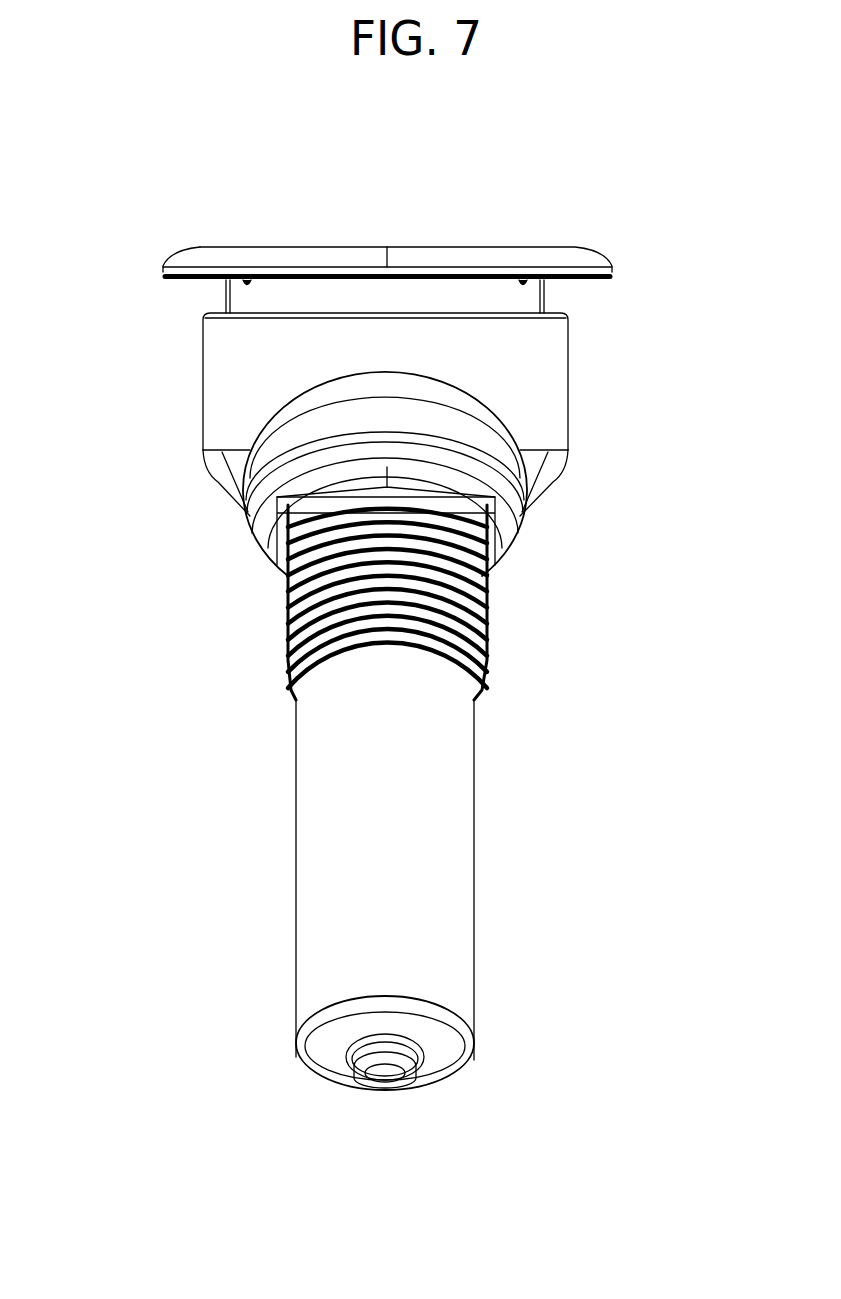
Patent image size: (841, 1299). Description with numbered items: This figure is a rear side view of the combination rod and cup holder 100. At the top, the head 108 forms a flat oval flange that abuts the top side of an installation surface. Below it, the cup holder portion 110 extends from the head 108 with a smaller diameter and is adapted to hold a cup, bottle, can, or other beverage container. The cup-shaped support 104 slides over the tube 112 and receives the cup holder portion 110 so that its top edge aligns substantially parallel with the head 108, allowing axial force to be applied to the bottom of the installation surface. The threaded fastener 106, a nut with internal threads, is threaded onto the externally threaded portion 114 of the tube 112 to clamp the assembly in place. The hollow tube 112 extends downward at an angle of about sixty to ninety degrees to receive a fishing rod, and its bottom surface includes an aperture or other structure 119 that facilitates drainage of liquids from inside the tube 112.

The combination rod and cup holder 100 is at (150, 165).
The head 108 is at (610, 272).
The cup holder portion 110 is at (533, 300).
The support 104 is at (560, 372).
The threaded fastener 106 is at (493, 580).
The externally threaded portion 114 is at (487, 647).
The tube 112 is at (465, 790).
The drainage aperture 119 is at (377, 1090).